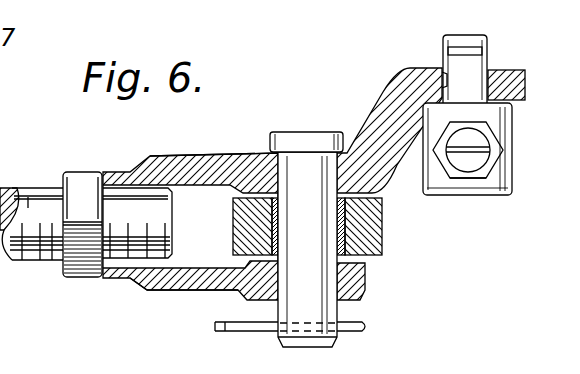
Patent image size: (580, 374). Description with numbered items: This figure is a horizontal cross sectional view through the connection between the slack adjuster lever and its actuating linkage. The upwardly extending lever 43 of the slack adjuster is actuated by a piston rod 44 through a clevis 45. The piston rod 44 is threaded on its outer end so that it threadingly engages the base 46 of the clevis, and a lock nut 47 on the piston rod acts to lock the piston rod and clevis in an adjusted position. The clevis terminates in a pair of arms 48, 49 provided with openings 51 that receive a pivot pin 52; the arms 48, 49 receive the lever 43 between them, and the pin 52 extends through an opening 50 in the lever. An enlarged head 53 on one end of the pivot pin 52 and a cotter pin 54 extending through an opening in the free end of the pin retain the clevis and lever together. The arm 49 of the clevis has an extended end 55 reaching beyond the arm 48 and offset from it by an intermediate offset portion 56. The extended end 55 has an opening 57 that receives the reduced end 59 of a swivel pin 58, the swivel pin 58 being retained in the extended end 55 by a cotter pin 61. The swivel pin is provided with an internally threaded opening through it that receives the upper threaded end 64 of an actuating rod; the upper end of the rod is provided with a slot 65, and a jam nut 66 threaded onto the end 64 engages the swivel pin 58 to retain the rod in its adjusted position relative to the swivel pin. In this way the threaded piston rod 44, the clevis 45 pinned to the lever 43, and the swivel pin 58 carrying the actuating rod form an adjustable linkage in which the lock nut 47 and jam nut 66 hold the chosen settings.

The lever 43 is at (375, 235).
The piston rod 44 is at (34, 170).
The clevis 45 is at (150, 296).
The base 46 is at (127, 178).
The lock nut 47 is at (72, 186).
The arm 48 is at (203, 284).
The arm 49 is at (218, 133).
The opening 50 is at (277, 242).
The openings 51 is at (330, 162).
The pivot pin 52 is at (296, 226).
The enlarged head 53 is at (284, 140).
The cotter pin 54 is at (248, 324).
The extended end 55 is at (510, 74).
The intermediate offset portion 56 is at (382, 120).
The opening 57 is at (441, 67).
The swivel pin 58 is at (503, 190).
The reduced end 59 is at (453, 62).
The cotter pin 61 is at (470, 50).
The upper threaded end 64 is at (468, 165).
The slot 65 is at (472, 147).
The jam nut 66 is at (450, 175).